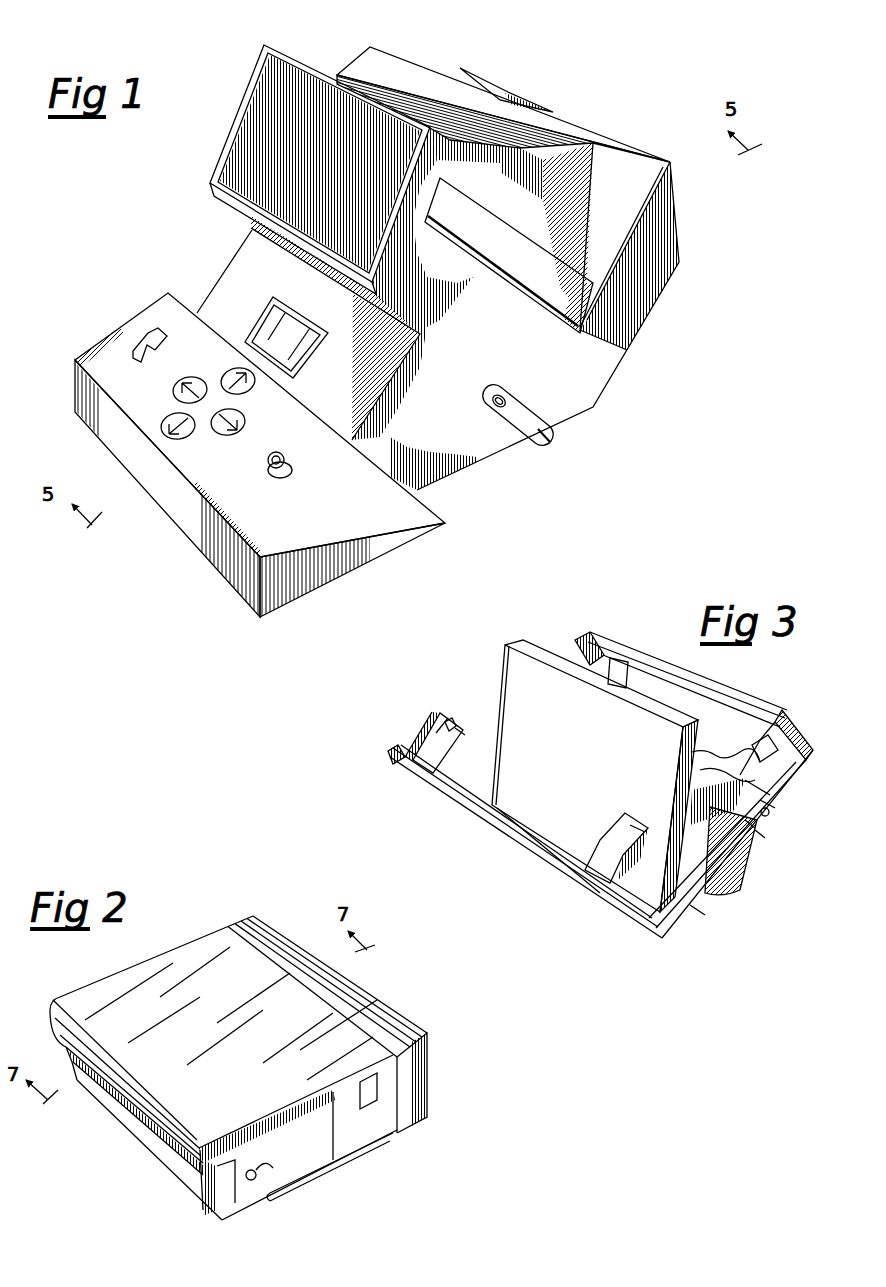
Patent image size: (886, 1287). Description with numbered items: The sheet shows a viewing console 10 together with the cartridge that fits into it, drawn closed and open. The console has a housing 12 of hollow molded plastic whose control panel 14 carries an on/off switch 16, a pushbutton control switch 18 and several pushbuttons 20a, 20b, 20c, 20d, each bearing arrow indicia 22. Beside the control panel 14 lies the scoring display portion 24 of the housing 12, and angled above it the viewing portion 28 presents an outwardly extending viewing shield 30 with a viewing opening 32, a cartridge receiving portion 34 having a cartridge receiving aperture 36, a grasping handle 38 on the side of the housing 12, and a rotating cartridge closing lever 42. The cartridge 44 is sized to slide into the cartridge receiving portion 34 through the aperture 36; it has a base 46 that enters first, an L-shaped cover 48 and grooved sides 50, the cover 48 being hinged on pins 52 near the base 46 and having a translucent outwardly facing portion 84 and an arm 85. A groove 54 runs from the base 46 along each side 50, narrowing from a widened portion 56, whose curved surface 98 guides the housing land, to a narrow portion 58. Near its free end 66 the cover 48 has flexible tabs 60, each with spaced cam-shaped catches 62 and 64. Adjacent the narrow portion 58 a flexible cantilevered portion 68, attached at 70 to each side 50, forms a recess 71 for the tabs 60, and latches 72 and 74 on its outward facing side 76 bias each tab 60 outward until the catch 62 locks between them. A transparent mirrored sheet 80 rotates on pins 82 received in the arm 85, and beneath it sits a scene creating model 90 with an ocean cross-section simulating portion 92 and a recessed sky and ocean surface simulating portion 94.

In FIG. 1, the viewing console 10 is at (158, 218).
In FIG. 1, the housing 12 is at (205, 288).
In FIG. 1, the control panel 14 is at (110, 349).
In FIG. 1, the on/off switch 16 is at (152, 336).
In FIG. 1, the pushbutton control switch 18 is at (266, 468).
In FIG. 1, the pushbutton 20a is at (190, 438).
In FIG. 1, the pushbutton 20b is at (244, 419).
In FIG. 1, the pushbutton 20c is at (173, 390).
In FIG. 1, the pushbutton 20d is at (233, 371).
In FIG. 1, the arrow indicia 22 is at (160, 440).
In FIG. 1, the scoring display portion 24 is at (274, 316).
In FIG. 1, the viewing portion 28 is at (450, 133).
In FIG. 1, the viewing shield 30 is at (290, 58).
In FIG. 1, the viewing opening 32 is at (244, 140).
In FIG. 1, the cartridge receiving portion 34 is at (670, 245).
In FIG. 1, the cartridge receiving aperture 36 is at (672, 201).
In FIG. 1, the grasping handle 38 is at (592, 308).
In FIG. 1, the rotating cartridge closing lever 42 is at (537, 446).
In FIG. 3, the cartridge 44 is at (561, 616).
In FIG. 2, the cartridge 44 is at (175, 935).
In FIG. 3, the base 46 is at (690, 926).
In FIG. 2, the base 46 is at (222, 1224).
In FIG. 3, the L-shaped cover 48 is at (541, 862).
In FIG. 2, the L-shaped cover 48 is at (138, 1114).
In FIG. 3, the grooved side 50 is at (787, 719).
In FIG. 2, the grooved side 50 is at (423, 1063).
In FIG. 2, the pin 52 is at (207, 1198).
In FIG. 3, the groove 54 is at (698, 916).
In FIG. 2, the groove 54 is at (262, 1203).
In FIG. 2, the widened portion 56 is at (236, 1214).
In FIG. 3, the narrow portion 58 is at (716, 882).
In FIG. 2, the narrow portion 58 is at (320, 1162).
In FIG. 3, the tab 60 is at (420, 746).
In FIG. 2, the tab 60 is at (362, 1102).
In FIG. 3, the catch 62 is at (447, 716).
In FIG. 3, the catch 64 is at (436, 733).
In FIG. 3, the free end 66 is at (461, 731).
In FIG. 3, the flexible cantilevered portion 68 is at (760, 832).
In FIG. 3, the attachment point 70 is at (751, 831).
In FIG. 3, the recess 71 is at (780, 801).
In FIG. 3, the latch 72 is at (767, 814).
In FIG. 3, the latch 74 is at (780, 806).
In FIG. 3, the outward facing side 76 is at (770, 770).
In FIG. 3, the transparent mirrored sheet 80 is at (517, 676).
In FIG. 2, the transparent mirrored sheet 80 is at (263, 947).
In FIG. 2, the pin 82 is at (202, 1176).
In FIG. 3, the translucent outwardly facing portion 84 is at (477, 815).
In FIG. 2, the translucent outwardly facing portion 84 is at (130, 983).
In FIG. 2, the arm 85 is at (213, 1216).
In FIG. 3, the three dimensional scene creating model 90 is at (628, 678).
In FIG. 3, the ocean cross-section simulating portion 92 is at (697, 794).
In FIG. 3, the recessed sky and ocean surface simulating portion 94 is at (700, 748).
In FIG. 2, the curved surface 98 is at (257, 1177).